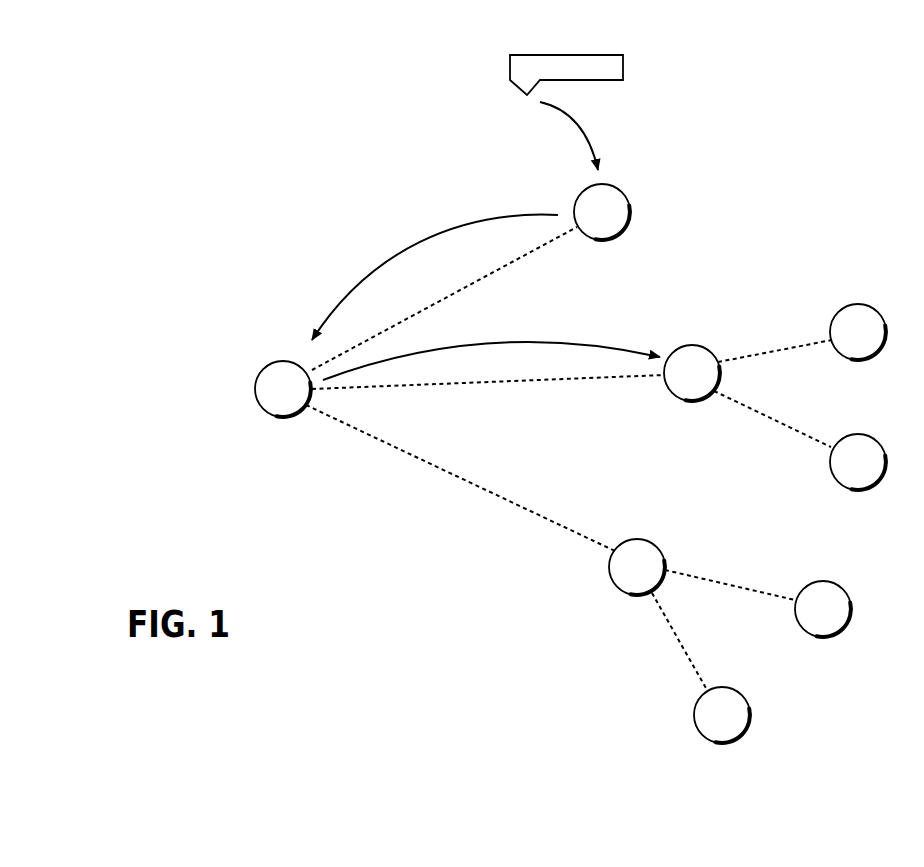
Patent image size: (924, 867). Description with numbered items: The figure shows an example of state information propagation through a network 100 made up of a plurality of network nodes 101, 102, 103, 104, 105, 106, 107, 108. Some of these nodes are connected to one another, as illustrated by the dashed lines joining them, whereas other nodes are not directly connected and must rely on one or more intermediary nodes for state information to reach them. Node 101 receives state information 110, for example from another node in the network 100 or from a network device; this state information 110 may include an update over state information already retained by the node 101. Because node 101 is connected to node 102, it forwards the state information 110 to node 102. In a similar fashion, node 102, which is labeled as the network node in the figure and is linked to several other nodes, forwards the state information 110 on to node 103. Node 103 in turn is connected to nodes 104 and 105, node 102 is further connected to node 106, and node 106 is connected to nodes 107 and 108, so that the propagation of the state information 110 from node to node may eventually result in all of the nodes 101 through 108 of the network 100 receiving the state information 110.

The network 100 is at (58, 116).
The node 101 is at (624, 236).
The node 102 is at (286, 417).
The node 103 is at (692, 401).
The node 104 is at (879, 355).
The node 105 is at (879, 485).
The node 106 is at (660, 586).
The node 107 is at (843, 632).
The node 108 is at (744, 737).
The state information 110 is at (510, 71).